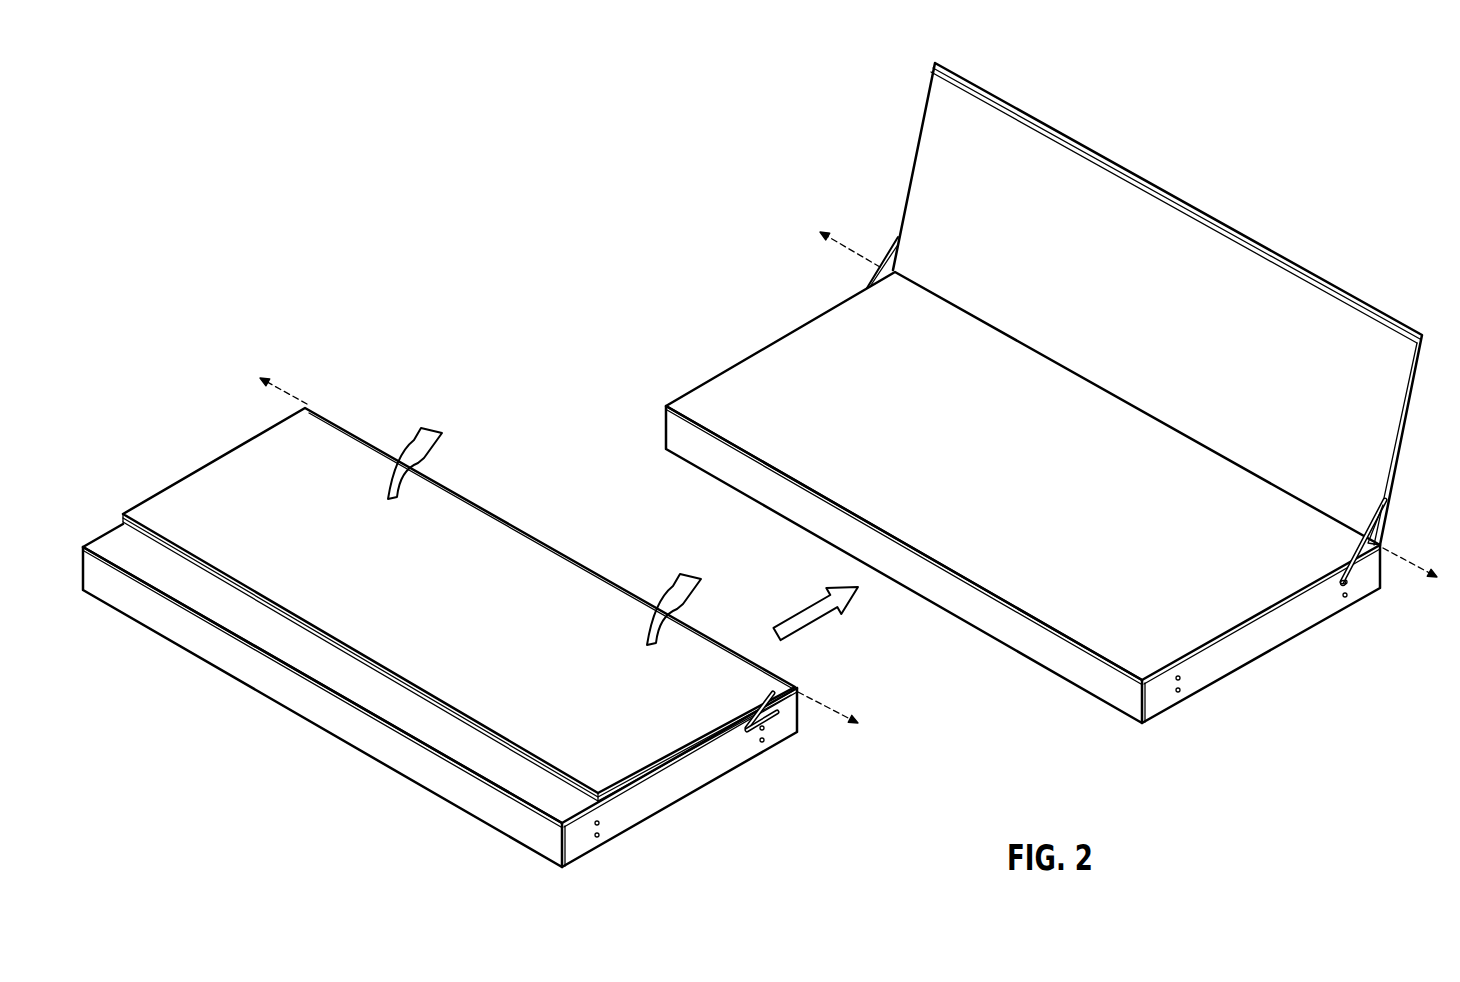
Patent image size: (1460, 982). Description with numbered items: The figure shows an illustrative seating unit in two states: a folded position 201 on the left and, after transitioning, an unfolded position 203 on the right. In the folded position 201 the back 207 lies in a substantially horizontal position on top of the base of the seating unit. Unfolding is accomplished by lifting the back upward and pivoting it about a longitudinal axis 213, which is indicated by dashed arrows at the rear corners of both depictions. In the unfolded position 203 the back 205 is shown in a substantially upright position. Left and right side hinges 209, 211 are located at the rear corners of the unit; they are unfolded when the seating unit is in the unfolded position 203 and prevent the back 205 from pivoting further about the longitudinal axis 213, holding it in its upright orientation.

The folded position 201 is at (693, 787).
The unfolded position 203 is at (1273, 633).
The back 205 is at (1303, 267).
The back 207 is at (225, 477).
The left side hinge 209 is at (888, 257).
The right side hinge 211 is at (1383, 517).
The longitudinal axis 213 is at (828, 705).